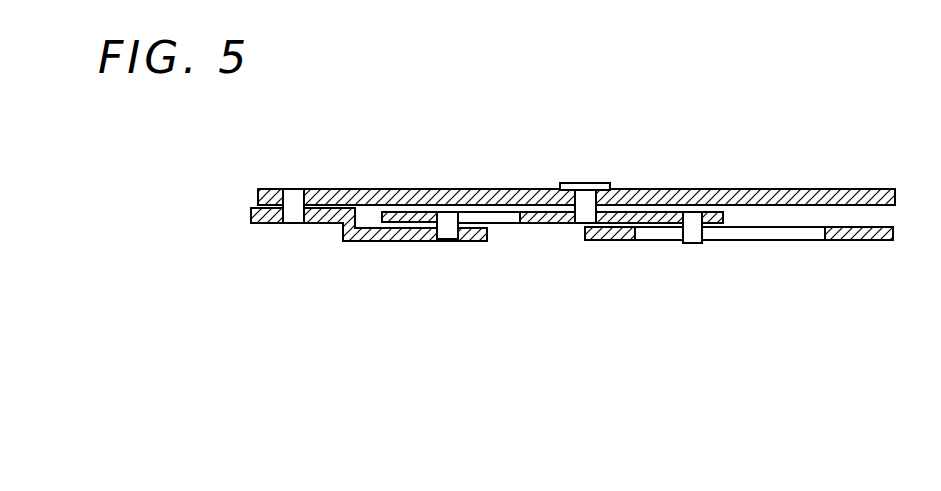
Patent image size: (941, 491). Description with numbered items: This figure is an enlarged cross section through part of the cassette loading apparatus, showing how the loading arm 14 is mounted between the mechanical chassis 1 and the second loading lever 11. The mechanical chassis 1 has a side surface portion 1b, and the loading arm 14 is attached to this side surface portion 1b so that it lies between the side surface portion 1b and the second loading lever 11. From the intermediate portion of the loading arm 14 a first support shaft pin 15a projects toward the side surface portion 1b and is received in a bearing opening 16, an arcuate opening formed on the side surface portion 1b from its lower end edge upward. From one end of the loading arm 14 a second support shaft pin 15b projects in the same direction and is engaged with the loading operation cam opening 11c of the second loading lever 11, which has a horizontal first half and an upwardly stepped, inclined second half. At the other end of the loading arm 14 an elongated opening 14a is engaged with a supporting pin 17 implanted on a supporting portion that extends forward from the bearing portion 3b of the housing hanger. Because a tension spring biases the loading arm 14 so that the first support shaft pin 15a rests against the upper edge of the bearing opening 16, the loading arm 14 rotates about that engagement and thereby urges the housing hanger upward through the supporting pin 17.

The mechanical chassis 1 is at (401, 189).
The side surface portion 1b is at (487, 190).
The supporting portion 3b is at (331, 224).
The loading arm 14 is at (565, 224).
The opening 14a is at (524, 224).
The first support shaft pin 15a is at (582, 190).
The second support shaft pin 15b is at (691, 243).
The bearing opening 16 is at (588, 190).
The supporting pin 17 is at (451, 212).
The second loading lever 11 is at (882, 241).
The loading operation cam opening 11c is at (819, 241).